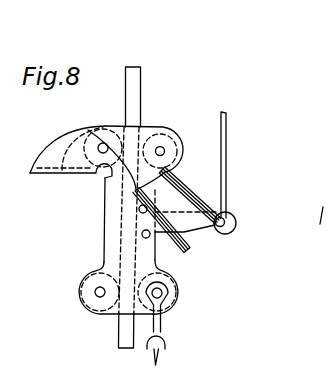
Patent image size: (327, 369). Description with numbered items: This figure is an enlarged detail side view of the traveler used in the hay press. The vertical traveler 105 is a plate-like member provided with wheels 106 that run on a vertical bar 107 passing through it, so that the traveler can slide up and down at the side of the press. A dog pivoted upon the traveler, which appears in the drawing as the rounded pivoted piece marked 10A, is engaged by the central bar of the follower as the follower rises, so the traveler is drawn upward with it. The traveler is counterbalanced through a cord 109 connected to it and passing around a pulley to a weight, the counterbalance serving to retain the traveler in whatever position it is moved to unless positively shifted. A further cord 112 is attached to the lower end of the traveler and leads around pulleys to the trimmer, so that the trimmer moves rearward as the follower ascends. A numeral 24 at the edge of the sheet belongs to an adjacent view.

The jaw member 10A is at (42, 174).
The vertical traveler 105 is at (108, 220).
The wheels 106 is at (86, 272).
The vertical bar 107 is at (141, 86).
The cord 109 is at (227, 140).
The cord 112 is at (160, 358).
The numeral fragment 24 is at (286, 358).